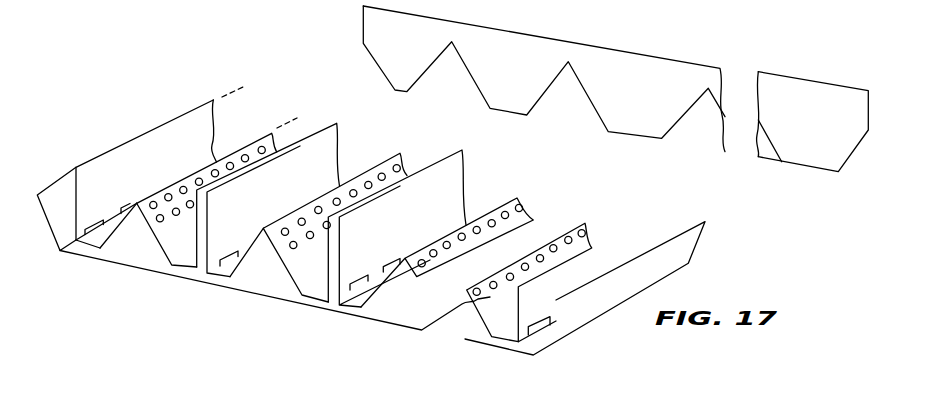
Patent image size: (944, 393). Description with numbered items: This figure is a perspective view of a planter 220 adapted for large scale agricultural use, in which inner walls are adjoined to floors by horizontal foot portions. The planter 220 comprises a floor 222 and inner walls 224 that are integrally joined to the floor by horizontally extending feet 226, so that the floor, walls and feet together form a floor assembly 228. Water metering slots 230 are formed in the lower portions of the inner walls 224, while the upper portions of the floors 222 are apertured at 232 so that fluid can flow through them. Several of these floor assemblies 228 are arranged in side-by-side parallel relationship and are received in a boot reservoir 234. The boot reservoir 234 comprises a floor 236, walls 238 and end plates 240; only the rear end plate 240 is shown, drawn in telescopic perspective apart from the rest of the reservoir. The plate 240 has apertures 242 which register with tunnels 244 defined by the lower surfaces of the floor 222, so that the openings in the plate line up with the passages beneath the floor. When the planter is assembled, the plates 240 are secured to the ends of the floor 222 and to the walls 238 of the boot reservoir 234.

The planter 220 is at (180, 307).
The floor 222 is at (241, 268).
The inner wall 224 is at (226, 192).
The horizontally extending foot 226 is at (81, 247).
The floor assembly 228 is at (167, 151).
The water metering slot 230 is at (99, 222).
The aperture 232 is at (523, 206).
The boot reservoir 234 is at (552, 337).
The floor 236 is at (303, 303).
The wall 238 is at (609, 310).
The end plate 240 is at (270, 276).
The aperture 242 is at (569, 110).
The tunnel 244 is at (139, 236).